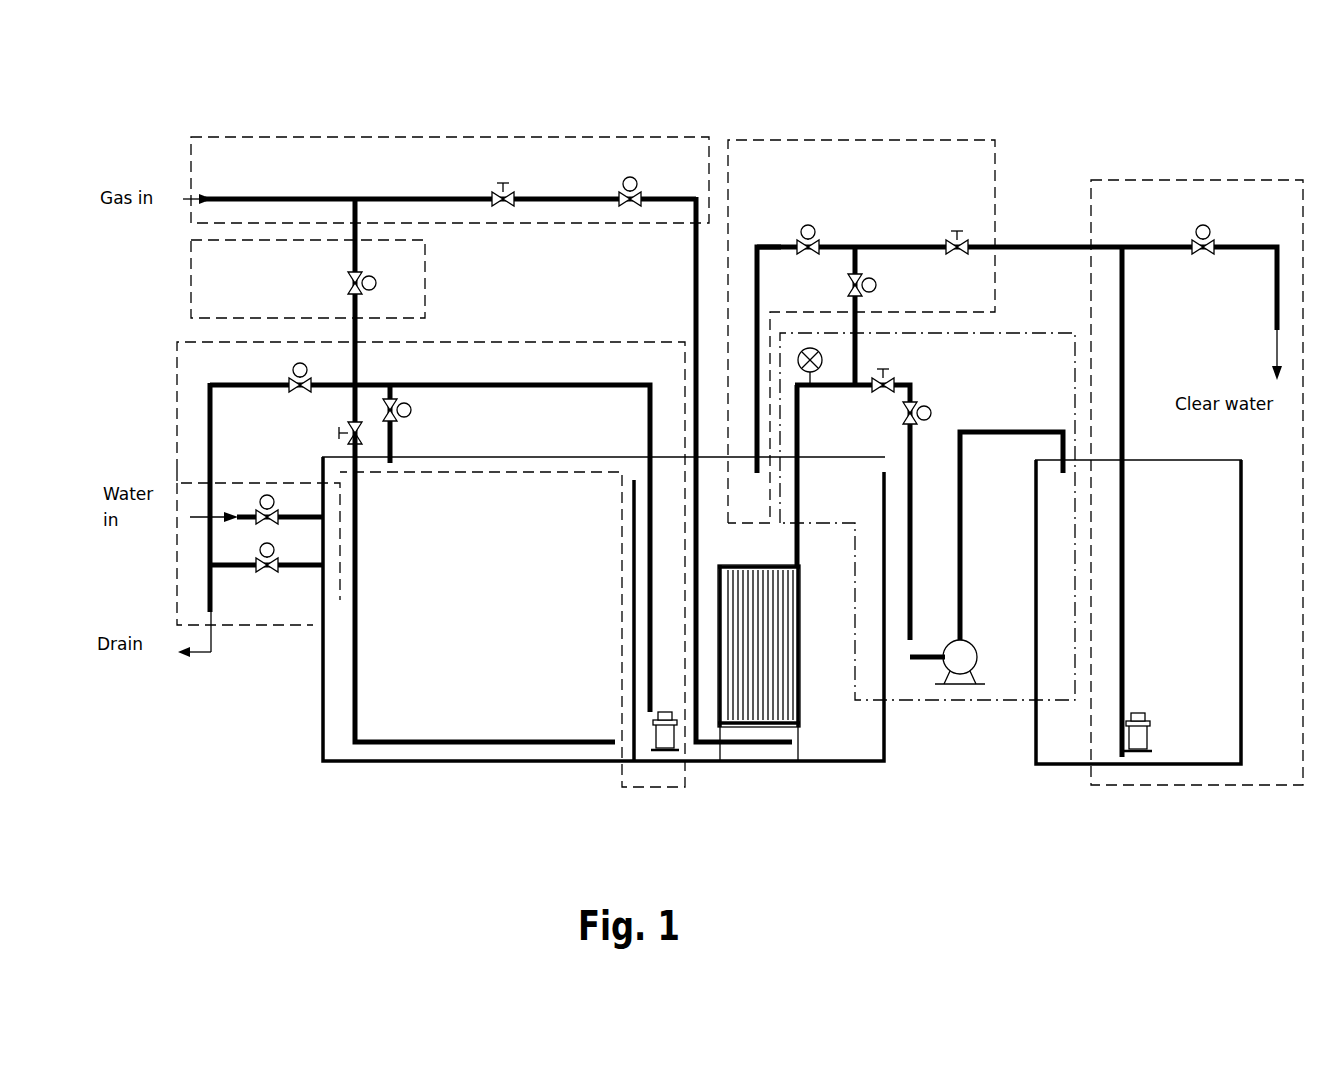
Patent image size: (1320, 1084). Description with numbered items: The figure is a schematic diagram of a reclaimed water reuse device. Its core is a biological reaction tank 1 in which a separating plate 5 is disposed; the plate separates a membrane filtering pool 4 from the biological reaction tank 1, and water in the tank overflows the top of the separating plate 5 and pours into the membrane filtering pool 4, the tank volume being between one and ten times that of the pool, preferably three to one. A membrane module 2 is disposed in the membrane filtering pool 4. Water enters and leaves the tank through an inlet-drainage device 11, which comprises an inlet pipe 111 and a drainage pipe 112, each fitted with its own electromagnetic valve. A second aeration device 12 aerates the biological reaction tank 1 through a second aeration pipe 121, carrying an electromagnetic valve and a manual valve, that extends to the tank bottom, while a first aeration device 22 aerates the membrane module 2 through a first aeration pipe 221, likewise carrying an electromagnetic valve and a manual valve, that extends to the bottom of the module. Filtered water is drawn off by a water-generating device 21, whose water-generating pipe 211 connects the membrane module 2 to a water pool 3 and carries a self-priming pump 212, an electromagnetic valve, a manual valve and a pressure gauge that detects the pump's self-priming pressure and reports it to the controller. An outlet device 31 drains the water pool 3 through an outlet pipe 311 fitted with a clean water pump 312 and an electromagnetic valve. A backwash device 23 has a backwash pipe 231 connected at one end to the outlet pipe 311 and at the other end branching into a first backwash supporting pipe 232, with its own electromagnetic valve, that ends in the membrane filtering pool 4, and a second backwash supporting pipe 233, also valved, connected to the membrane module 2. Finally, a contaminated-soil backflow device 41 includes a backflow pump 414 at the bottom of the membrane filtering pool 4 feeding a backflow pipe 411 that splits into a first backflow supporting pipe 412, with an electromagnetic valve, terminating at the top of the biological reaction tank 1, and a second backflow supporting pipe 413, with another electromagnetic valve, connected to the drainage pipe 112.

The biological reaction tank 1 is at (603, 650).
The inlet-drainage device 11 is at (258, 611).
The inlet pipe 111 is at (254, 604).
The drainage pipe 112 is at (266, 665).
The second aeration device 12 is at (301, 202).
The second aeration pipe 121 is at (378, 265).
The membrane module 2 is at (745, 614).
The water-generating device 21 is at (927, 588).
The water-generating pipe 211 is at (1032, 363).
The self-priming pump 212 is at (927, 741).
The first aeration device 22 is at (450, 154).
The first aeration pipe 221 is at (450, 146).
The backwash device 23 is at (861, 304).
The backwash pipe 231 is at (1019, 233).
The first backwash supporting pipe 232 is at (747, 279).
The second backwash supporting pipe 233 is at (900, 236).
The water pool 3 is at (1127, 651).
The outlet device 31 is at (1197, 511).
The outlet pipe 311 is at (1221, 421).
The clean water pump 312 is at (1112, 778).
The membrane filtering pool 4 is at (509, 520).
The contaminated-soil backflow device 41 is at (481, 614).
The backflow pipe 411 is at (430, 399).
The first backflow supporting pipe 412 is at (427, 638).
The second backflow supporting pipe 413 is at (257, 371).
The backflow pump 414 is at (641, 777).
The separating plate 5 is at (587, 661).